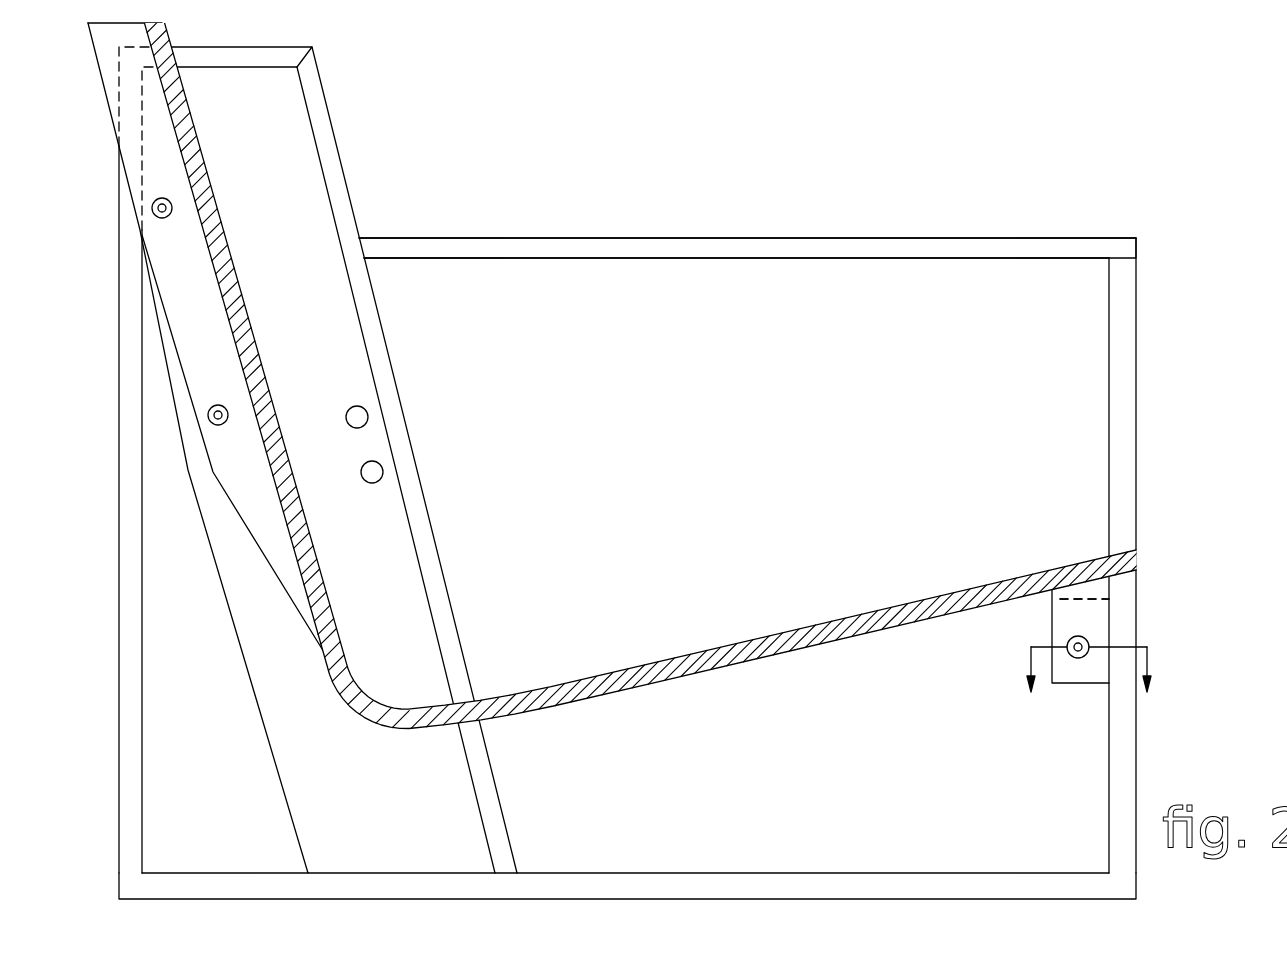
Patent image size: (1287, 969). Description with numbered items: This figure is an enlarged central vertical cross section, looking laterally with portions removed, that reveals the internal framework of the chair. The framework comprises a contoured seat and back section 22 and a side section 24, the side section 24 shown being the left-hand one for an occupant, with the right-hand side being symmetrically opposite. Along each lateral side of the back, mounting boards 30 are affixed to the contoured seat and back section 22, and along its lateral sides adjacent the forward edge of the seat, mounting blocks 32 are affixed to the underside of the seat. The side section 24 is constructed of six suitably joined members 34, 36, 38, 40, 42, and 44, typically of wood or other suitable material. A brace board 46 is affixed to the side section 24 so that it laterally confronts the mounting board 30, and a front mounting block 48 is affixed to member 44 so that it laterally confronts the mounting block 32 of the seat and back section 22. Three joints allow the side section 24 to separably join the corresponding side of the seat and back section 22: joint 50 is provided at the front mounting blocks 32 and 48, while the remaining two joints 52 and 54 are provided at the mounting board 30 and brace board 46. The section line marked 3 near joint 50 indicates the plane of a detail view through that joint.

The contoured seat and back section 22 is at (650, 664).
The side section 24 is at (432, 239).
The mounting board 30 is at (188, 308).
The mounting block 32 is at (1090, 618).
The member 34 is at (708, 892).
The member 36 is at (228, 47).
The member 38 is at (598, 248).
The member 40 is at (128, 558).
The member 42 is at (373, 348).
The member 44 is at (1123, 373).
The brace board 46 is at (248, 590).
The front mounting block 48 is at (1078, 599).
The joint 50 is at (1080, 658).
The joint 52 is at (228, 415).
The joint 54 is at (172, 208).
The section line 3- 3 is at (1089, 655).